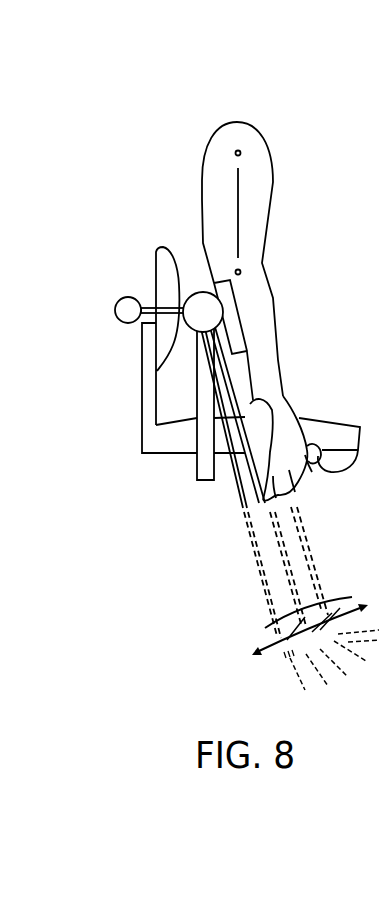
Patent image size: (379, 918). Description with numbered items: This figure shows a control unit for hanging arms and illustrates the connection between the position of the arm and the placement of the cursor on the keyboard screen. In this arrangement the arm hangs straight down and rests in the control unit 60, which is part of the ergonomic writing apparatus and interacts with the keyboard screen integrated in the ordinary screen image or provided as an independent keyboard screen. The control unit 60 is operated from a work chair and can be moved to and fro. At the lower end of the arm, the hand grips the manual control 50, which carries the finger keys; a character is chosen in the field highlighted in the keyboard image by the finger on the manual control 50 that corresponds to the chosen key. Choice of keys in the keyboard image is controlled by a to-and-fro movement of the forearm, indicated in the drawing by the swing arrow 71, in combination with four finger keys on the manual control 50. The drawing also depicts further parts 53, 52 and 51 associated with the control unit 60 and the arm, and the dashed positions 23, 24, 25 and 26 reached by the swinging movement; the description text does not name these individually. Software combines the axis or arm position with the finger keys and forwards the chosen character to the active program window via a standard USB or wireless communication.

The control unit 60 is at (277, 274).
The plate 53 is at (230, 331).
The wrist 52 is at (248, 400).
The rods 51 is at (262, 453).
The manual control 50 is at (310, 473).
The swing direction arrow 71 is at (276, 651).
The fourth position 26 is at (303, 688).
The third position 25 is at (322, 684).
The second position 24 is at (339, 676).
The first position 23 is at (356, 660).